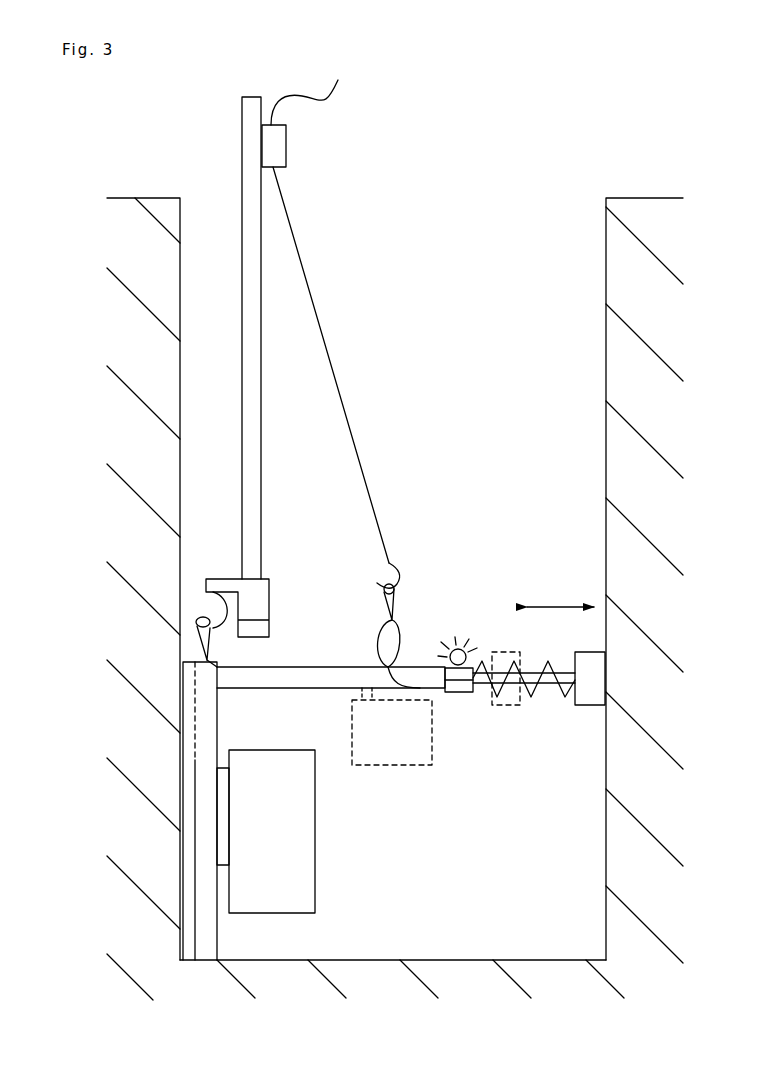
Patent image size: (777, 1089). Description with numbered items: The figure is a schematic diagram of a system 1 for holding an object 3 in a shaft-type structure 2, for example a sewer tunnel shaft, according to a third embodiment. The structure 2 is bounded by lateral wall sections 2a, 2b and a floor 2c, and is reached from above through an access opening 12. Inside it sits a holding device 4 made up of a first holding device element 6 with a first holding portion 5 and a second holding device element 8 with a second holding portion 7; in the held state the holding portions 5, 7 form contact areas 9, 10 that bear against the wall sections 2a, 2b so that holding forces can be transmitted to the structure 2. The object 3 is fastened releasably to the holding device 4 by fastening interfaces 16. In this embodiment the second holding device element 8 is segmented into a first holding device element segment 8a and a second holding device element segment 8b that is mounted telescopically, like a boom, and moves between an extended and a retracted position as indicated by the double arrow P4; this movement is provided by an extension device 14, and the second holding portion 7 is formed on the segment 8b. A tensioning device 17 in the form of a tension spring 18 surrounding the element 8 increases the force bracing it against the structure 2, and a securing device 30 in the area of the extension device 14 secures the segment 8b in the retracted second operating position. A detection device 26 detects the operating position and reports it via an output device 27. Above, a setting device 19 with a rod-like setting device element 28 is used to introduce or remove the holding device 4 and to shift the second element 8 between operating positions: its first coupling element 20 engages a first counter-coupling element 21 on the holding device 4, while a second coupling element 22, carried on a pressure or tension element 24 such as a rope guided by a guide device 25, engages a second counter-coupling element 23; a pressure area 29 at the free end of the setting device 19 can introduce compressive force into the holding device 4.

The system 1 is at (462, 343).
The structure 2 is at (395, 580).
The wall section 2a is at (180, 838).
The wall section 2b is at (608, 862).
The floor 2c is at (452, 962).
The object 3 is at (343, 800).
The holding device 4 is at (340, 790).
The first holding portion 5 is at (193, 742).
The first holding device element 6 is at (218, 920).
The second holding portion 7 is at (509, 707).
The second holding device element 8 is at (396, 684).
The first holding device element segment 8a is at (290, 666).
The second holding device element segment 8b is at (532, 664).
The contact area 9 is at (178, 725).
The contact area 10 is at (610, 679).
The access opening 12 is at (507, 177).
The extension device 14 is at (452, 695).
The fastening interface 16 is at (230, 812).
The tensioning device 17 is at (556, 701).
The tension spring 18 is at (570, 706).
The setting device 19 is at (314, 261).
The first coupling element 20 is at (209, 605).
The first counter-coupling element 21 is at (199, 634).
The second coupling element 22 is at (399, 569).
The second counter-coupling element 23 is at (402, 629).
The pressure or tension element 24 is at (336, 372).
The guide device 25 is at (286, 148).
The detection device 26 is at (463, 647).
The output device 27 is at (457, 647).
The setting device element 28 is at (242, 376).
The pressure area 29 is at (212, 669).
The securing device 30 is at (468, 692).
The double arrow P4 is at (560, 603).